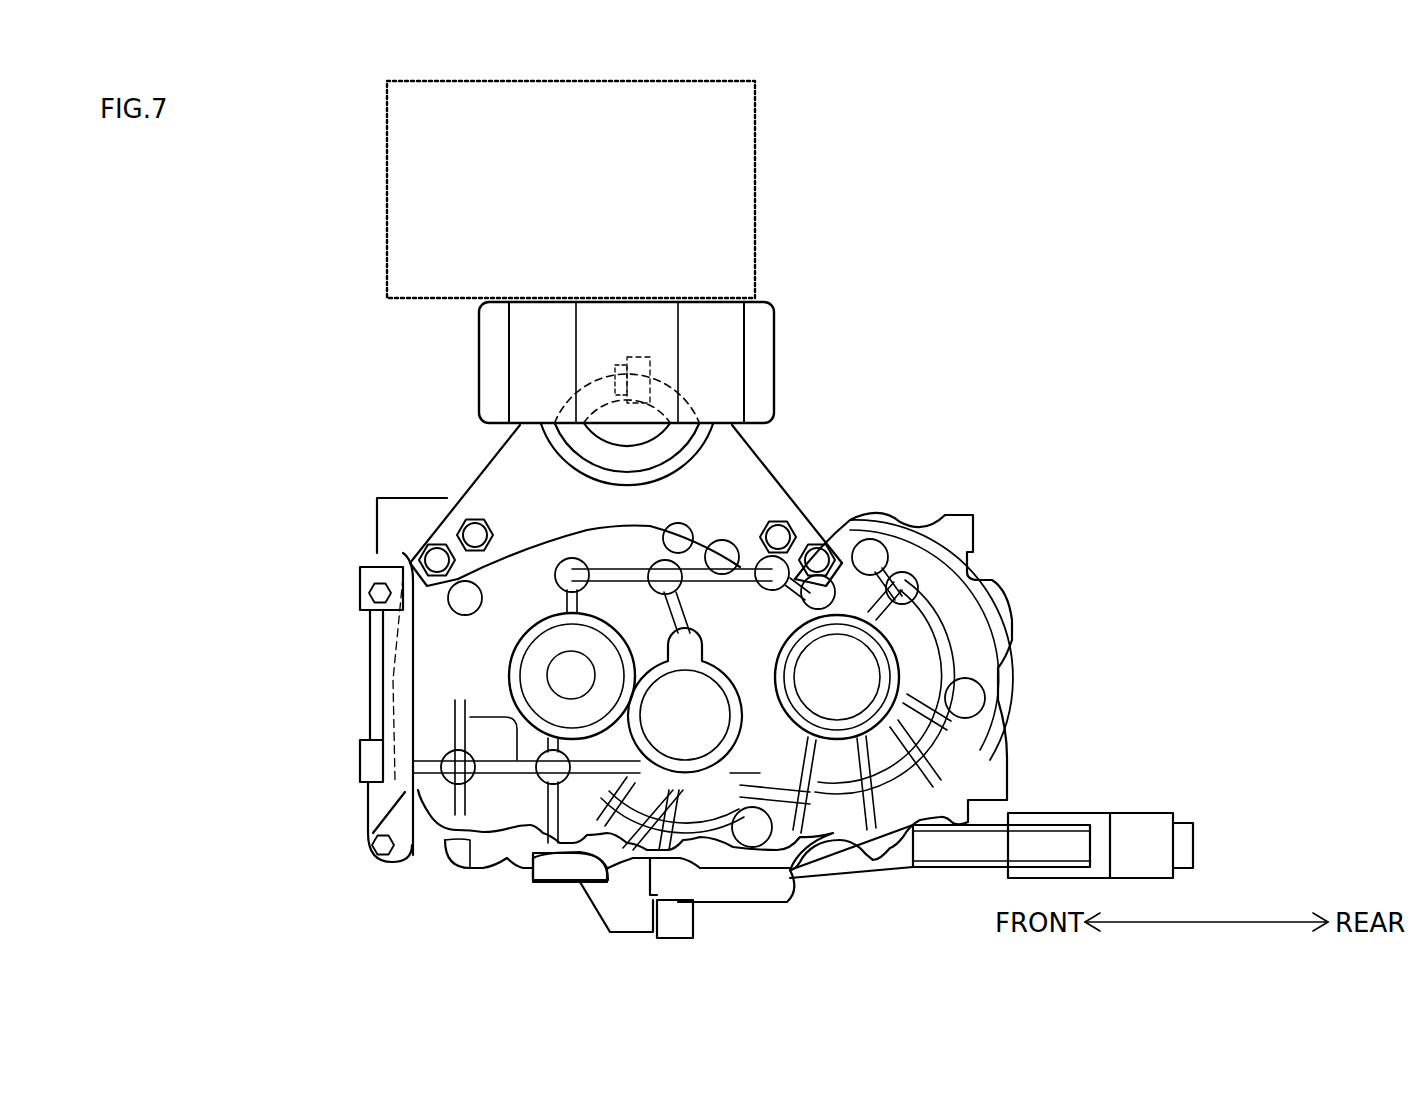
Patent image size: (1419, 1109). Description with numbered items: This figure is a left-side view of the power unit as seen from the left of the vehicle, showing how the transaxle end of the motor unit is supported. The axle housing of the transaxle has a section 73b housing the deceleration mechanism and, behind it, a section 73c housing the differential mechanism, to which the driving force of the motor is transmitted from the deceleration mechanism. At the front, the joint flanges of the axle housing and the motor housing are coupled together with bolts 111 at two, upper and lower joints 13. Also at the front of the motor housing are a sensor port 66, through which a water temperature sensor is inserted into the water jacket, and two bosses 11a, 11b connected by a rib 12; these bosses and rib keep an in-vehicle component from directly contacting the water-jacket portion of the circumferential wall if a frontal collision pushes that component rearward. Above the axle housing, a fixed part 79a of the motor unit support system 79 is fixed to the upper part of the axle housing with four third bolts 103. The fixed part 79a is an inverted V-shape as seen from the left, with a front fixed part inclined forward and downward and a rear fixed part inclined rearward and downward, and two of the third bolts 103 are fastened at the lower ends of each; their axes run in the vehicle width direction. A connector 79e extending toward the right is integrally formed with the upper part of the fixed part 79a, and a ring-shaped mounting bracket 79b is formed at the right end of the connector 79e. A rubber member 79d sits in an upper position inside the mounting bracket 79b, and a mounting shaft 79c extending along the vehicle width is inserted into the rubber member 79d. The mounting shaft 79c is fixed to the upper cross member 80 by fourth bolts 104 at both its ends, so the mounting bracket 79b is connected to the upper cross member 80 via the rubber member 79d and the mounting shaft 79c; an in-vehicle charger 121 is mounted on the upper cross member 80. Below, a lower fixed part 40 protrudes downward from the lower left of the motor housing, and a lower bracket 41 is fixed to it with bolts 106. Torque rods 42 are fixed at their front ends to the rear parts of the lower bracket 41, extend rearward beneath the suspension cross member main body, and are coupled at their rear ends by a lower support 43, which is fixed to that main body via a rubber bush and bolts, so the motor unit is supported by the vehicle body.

The in-vehicle charger 121 is at (570, 203).
The upper cross member 80 is at (762, 322).
The motor unit support system 79 is at (778, 440).
The fixed part 79a is at (780, 468).
The mounting bracket 79b is at (627, 316).
The mounting shaft 79c is at (705, 373).
The rubber member 79d is at (612, 350).
The connector 79e is at (640, 480).
The fourth bolts 104 is at (548, 373).
The third bolts 103 is at (437, 556).
The section housing the differential mechanism 73c is at (1012, 675).
The section housing the deceleration mechanism 73b is at (490, 875).
The boss 11a is at (385, 580).
The boss 11b is at (360, 760).
The bolts 111 is at (370, 592).
The rib 12 is at (368, 690).
The sensor port 66 is at (370, 617).
The joints 13 is at (405, 575).
The lower fixed part 40 is at (613, 900).
The lower bracket 41 is at (650, 920).
The bolts 106 is at (688, 918).
The torque rods 42 is at (953, 875).
The lower support 43 is at (1100, 813).